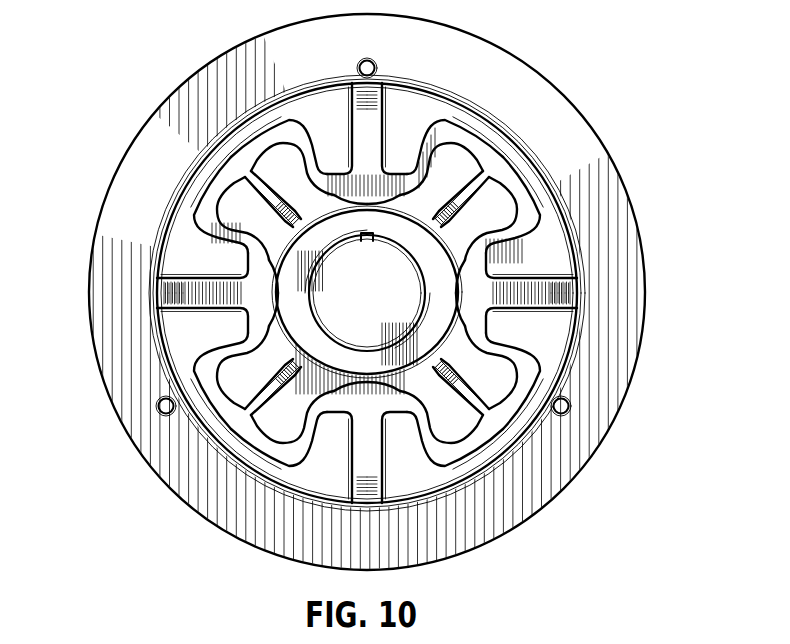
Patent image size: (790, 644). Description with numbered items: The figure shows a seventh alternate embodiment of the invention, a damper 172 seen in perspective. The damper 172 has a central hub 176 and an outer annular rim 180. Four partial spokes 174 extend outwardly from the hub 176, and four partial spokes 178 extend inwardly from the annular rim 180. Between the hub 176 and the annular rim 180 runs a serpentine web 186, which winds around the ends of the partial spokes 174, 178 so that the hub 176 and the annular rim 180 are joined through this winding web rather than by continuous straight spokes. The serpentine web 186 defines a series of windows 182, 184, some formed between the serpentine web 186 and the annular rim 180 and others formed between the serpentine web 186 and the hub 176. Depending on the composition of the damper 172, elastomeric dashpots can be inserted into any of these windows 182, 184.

The damper 172 is at (602, 80).
The partial spokes 174 is at (262, 205).
The hub 176 is at (423, 248).
The partial spokes 178 is at (362, 130).
The annular rim 180 is at (597, 152).
The windows 182 is at (280, 170).
The windows 184 is at (400, 125).
The serpentine web 186 is at (547, 214).